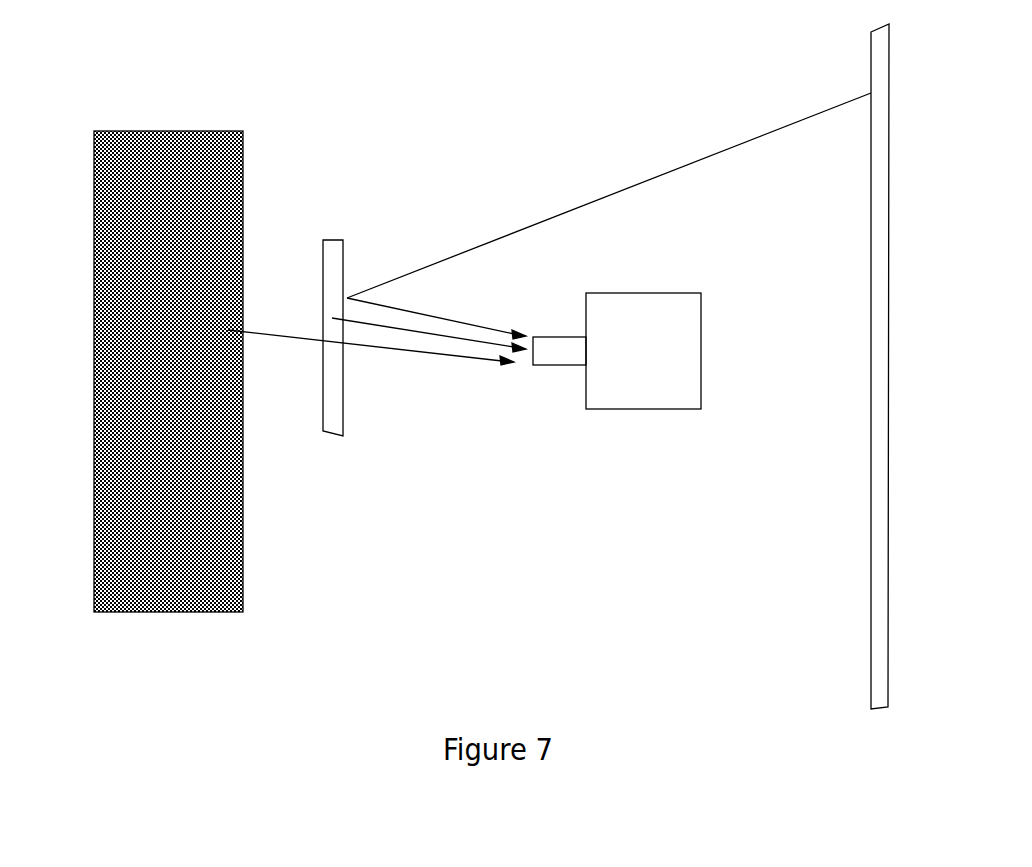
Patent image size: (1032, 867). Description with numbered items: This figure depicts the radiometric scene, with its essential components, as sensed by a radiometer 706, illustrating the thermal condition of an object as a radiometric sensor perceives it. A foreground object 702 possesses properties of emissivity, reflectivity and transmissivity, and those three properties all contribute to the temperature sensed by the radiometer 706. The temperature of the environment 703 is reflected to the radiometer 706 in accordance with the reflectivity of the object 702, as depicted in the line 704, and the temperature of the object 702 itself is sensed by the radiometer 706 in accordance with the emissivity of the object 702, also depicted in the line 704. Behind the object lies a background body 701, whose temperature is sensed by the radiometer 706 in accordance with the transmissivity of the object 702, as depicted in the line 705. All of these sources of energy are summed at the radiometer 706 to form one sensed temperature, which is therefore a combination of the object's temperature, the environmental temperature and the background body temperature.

The background body 701 is at (249, 138).
The foreground object 702 is at (340, 240).
The environment 703 is at (877, 173).
The line 704 is at (462, 342).
The line 705 is at (398, 352).
The radiometer 706 is at (692, 293).